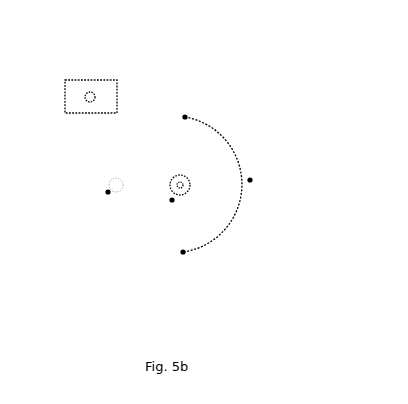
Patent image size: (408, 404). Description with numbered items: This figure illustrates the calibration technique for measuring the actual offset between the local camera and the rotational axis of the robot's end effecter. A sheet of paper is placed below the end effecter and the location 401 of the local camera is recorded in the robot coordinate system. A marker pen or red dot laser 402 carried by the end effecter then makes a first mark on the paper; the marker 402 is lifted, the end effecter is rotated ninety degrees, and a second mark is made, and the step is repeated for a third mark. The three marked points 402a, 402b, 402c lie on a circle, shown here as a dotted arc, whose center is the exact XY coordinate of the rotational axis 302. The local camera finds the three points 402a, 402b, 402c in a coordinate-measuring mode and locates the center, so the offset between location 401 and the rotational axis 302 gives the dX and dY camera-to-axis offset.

The location of the local camera 401 is at (90, 82).
The marker pen or red dot laser 402 is at (108, 192).
The first marked point 402a is at (185, 117).
The second marked point 402b is at (250, 180).
The third marked point 402c is at (183, 252).
The rotational axis 302 is at (172, 200).